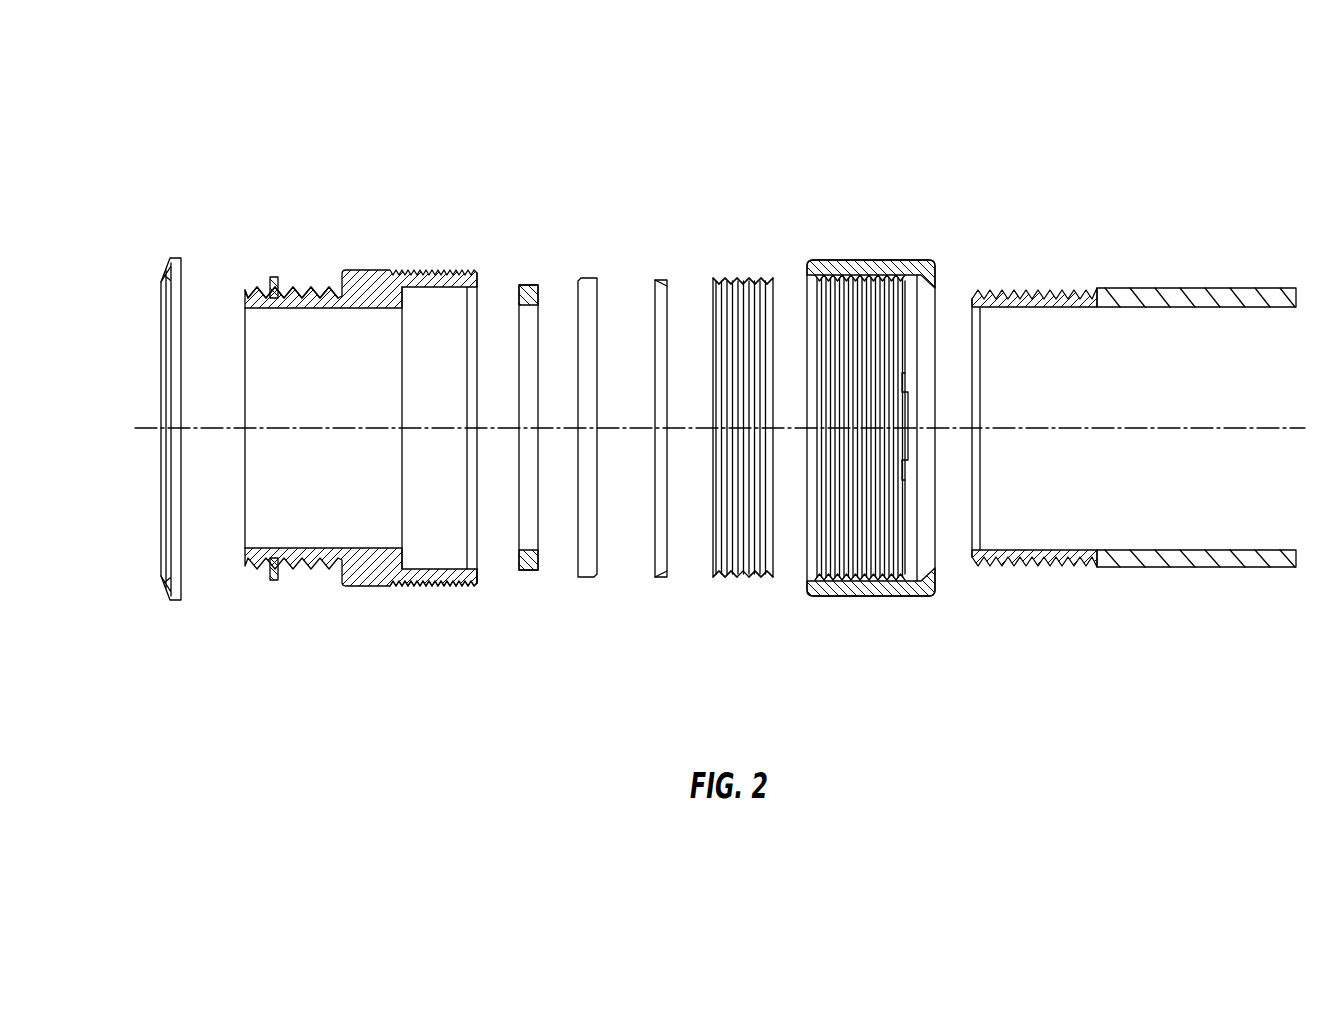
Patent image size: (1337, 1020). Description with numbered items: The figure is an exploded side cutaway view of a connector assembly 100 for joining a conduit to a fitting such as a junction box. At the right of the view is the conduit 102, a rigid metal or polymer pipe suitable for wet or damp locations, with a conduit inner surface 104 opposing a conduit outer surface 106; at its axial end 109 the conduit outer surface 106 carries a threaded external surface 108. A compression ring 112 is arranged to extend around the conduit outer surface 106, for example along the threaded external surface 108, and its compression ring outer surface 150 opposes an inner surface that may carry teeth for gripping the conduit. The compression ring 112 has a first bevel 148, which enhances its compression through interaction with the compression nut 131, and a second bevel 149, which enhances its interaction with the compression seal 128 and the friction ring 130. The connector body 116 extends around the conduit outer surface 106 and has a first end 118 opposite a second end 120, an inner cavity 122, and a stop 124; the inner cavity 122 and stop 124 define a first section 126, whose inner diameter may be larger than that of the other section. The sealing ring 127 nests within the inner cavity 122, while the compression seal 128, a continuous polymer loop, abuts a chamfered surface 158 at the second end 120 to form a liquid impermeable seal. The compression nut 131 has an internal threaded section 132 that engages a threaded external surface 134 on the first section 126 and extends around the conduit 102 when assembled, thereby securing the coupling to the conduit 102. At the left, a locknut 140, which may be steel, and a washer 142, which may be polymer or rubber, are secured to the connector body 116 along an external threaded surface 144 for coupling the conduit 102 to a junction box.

The connector assembly 100 is at (755, 85).
The conduit 102 is at (1141, 429).
The conduit inner surface 104 is at (1158, 310).
The conduit outer surface 106 is at (1233, 568).
The threaded external surface 108 is at (1025, 290).
The axial end 109 is at (963, 566).
The compression ring 112 is at (739, 444).
The connector body 116 is at (350, 403).
The first end 118 is at (242, 296).
The second end 120 is at (478, 280).
The inner cavity 122 is at (268, 488).
The stop 124 is at (405, 583).
The first section 126 is at (432, 298).
The sealing ring 127 is at (527, 285).
The compression seal 128 is at (587, 278).
The friction ring 130 is at (662, 280).
The compression nut 131 is at (887, 369).
The internal threaded section 132 is at (890, 273).
The threaded external surface 134 is at (425, 586).
The locknut 140 is at (170, 258).
The washer 142 is at (276, 280).
The external threaded surface 144 is at (295, 572).
The first bevel 148 is at (766, 578).
The second bevel 149 is at (718, 578).
The compression ring outer surface 150 is at (740, 278).
The chamfered surface 158 is at (480, 566).